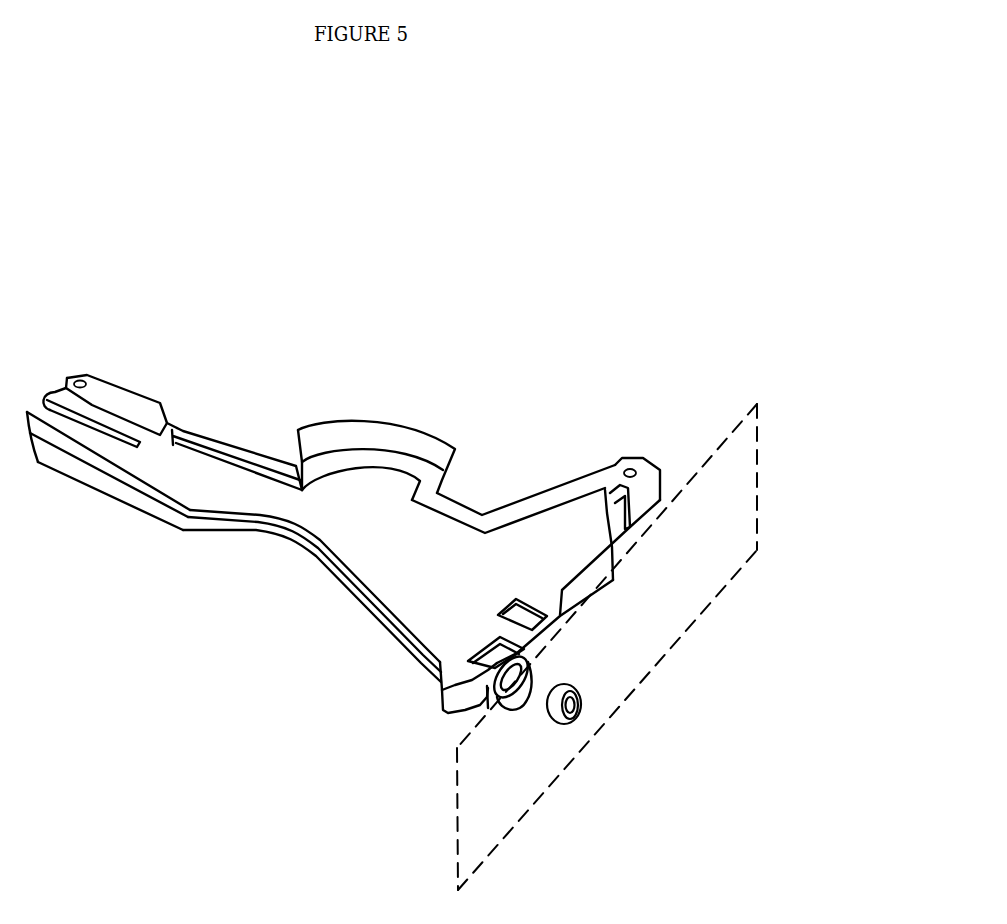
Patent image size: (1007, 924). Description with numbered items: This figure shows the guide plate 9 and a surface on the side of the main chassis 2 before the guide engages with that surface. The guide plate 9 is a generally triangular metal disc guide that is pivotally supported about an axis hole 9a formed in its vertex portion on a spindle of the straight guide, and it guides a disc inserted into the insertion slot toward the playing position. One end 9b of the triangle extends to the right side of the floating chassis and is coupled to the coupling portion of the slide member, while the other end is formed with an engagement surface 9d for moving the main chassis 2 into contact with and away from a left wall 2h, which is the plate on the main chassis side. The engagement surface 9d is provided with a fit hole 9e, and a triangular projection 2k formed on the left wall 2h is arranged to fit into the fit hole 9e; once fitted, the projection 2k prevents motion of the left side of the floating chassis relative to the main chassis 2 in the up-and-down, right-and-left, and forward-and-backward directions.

The guide plate 9 is at (364, 572).
The axis hole 9a is at (630, 470).
The one end of the guide plate 9b is at (78, 378).
The engagement surface 9d is at (490, 706).
The fit hole 9e is at (524, 705).
The main chassis 2 is at (681, 647).
The left wall 2h is at (680, 641).
The triangular projection 2k is at (573, 724).